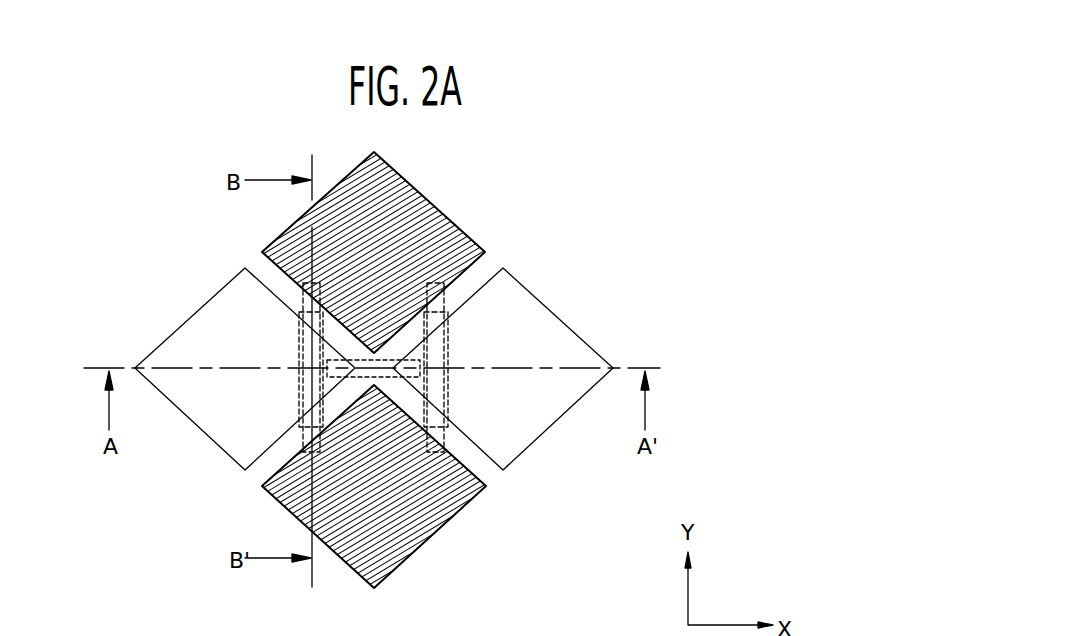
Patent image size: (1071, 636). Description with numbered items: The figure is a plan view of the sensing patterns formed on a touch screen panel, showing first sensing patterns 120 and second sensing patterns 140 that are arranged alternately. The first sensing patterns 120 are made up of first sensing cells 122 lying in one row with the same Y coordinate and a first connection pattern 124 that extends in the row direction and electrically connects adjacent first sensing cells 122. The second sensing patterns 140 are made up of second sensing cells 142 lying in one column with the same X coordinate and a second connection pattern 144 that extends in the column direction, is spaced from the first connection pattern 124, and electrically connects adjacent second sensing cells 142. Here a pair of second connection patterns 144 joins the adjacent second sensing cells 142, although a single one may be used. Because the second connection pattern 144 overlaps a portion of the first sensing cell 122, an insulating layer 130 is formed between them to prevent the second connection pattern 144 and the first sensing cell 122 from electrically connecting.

The first sensing pattern 120 is at (430, 366).
The first sensing cell 122 is at (200, 333).
The first connection pattern 124 is at (572, 342).
The insulating layer 130 is at (300, 393).
The second sensing pattern 140 is at (399, 342).
The second sensing cell 142 is at (428, 206).
The second connection pattern 144 is at (448, 298).